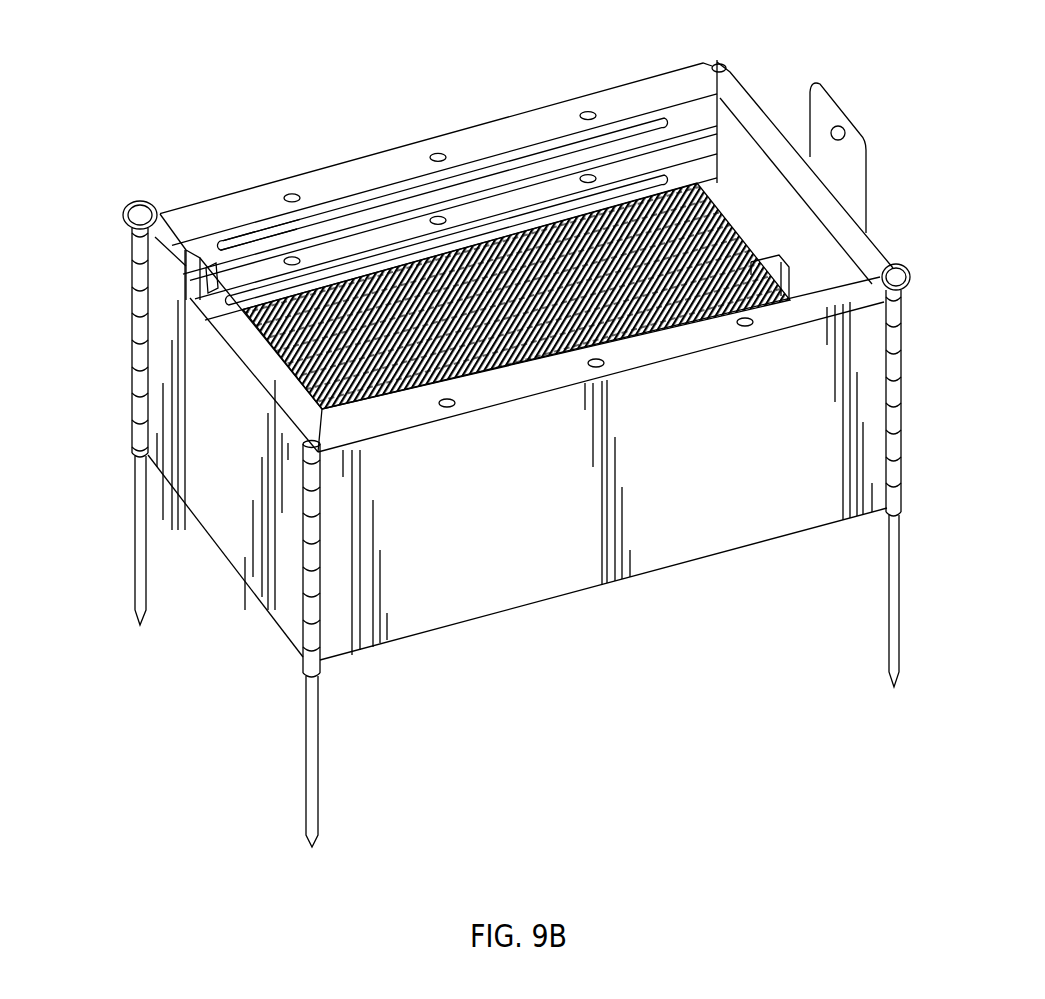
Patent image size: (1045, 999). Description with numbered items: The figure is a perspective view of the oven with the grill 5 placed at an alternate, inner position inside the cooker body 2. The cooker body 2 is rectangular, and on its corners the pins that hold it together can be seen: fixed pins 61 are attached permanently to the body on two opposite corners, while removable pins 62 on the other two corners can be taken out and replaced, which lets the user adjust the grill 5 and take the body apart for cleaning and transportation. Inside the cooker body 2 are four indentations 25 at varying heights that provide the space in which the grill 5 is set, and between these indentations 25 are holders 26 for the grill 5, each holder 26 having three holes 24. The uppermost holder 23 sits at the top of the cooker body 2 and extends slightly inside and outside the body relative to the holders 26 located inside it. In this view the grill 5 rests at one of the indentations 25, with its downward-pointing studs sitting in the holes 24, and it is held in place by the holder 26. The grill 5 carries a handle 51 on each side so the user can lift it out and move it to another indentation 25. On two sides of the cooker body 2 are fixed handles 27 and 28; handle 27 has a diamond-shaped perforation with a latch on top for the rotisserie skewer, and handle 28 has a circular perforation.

The cooker body 2 is at (547, 588).
The grill 5 is at (662, 200).
The uppermost holder 23 is at (748, 93).
The holes 24 is at (441, 153).
The indentations 25 is at (223, 245).
The holders 26 is at (310, 253).
The handle 27 is at (185, 290).
The handle 28 is at (840, 110).
The handles 51 is at (788, 280).
The fixed pins 61 is at (308, 790).
The removable pins 62 is at (135, 570).